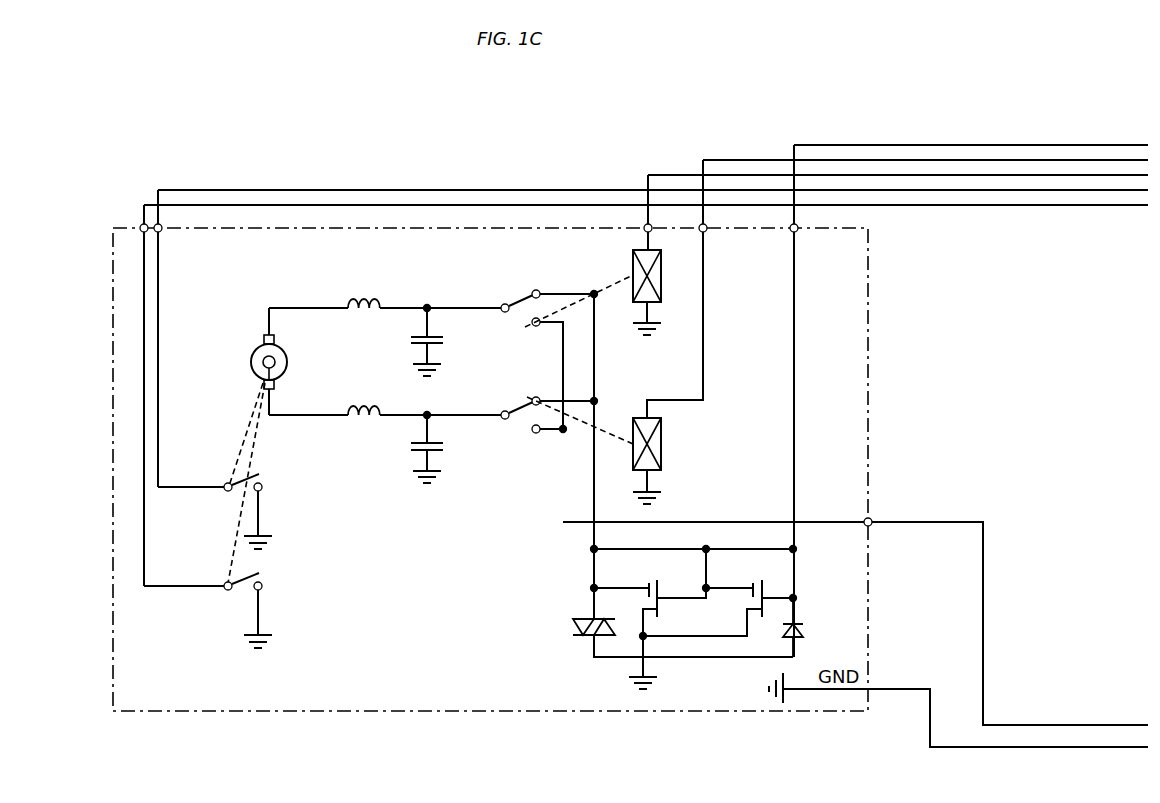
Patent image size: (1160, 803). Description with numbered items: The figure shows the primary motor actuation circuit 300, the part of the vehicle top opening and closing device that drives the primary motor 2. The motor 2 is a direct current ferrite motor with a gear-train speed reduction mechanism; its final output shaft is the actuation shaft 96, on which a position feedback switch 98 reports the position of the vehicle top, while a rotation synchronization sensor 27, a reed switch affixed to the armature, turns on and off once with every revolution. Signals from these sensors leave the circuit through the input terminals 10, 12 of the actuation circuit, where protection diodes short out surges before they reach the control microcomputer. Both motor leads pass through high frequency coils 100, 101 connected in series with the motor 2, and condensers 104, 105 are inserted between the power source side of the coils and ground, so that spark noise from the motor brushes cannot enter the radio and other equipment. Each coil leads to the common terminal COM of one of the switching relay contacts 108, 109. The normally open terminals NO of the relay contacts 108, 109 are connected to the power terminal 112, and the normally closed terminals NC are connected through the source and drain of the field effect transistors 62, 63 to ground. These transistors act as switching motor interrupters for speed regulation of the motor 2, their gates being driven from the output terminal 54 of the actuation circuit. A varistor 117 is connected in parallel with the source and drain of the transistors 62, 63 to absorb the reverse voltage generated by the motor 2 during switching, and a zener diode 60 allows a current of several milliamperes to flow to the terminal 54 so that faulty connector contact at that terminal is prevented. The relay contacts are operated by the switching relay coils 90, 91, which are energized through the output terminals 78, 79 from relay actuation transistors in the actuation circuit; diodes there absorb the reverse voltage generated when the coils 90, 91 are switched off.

The primary motor actuation circuit 300 is at (111, 250).
The input terminal 10 is at (143, 225).
The input terminal 12 is at (160, 231).
The primary motor 2 is at (253, 352).
The actuation shaft 96 is at (261, 365).
The position feedback switch 98 is at (230, 495).
The rotation synchronization sensor 27 is at (247, 595).
The high frequency coil 100 is at (357, 291).
The high frequency coil 101 is at (374, 404).
The condenser 104 is at (446, 341).
The condenser 105 is at (446, 448).
The switching relay contact 108 is at (520, 319).
The switching relay contact 109 is at (538, 418).
The switching relay coil 90 is at (661, 276).
The switching relay coil 91 is at (661, 444).
The output terminal 78 is at (645, 226).
The output terminal 79 is at (702, 225).
The output terminal 54 is at (790, 225).
The power terminal 112 is at (866, 519).
The field effect transistor 62 is at (654, 580).
The field effect transistor 63 is at (751, 578).
The varistor 117 is at (575, 628).
The zener diode 60 is at (805, 633).